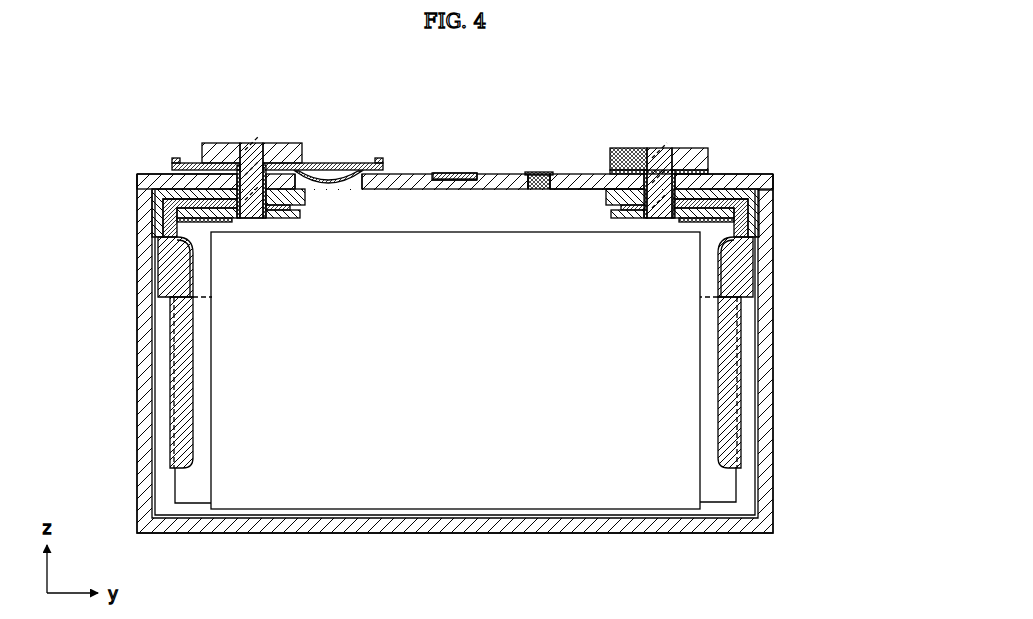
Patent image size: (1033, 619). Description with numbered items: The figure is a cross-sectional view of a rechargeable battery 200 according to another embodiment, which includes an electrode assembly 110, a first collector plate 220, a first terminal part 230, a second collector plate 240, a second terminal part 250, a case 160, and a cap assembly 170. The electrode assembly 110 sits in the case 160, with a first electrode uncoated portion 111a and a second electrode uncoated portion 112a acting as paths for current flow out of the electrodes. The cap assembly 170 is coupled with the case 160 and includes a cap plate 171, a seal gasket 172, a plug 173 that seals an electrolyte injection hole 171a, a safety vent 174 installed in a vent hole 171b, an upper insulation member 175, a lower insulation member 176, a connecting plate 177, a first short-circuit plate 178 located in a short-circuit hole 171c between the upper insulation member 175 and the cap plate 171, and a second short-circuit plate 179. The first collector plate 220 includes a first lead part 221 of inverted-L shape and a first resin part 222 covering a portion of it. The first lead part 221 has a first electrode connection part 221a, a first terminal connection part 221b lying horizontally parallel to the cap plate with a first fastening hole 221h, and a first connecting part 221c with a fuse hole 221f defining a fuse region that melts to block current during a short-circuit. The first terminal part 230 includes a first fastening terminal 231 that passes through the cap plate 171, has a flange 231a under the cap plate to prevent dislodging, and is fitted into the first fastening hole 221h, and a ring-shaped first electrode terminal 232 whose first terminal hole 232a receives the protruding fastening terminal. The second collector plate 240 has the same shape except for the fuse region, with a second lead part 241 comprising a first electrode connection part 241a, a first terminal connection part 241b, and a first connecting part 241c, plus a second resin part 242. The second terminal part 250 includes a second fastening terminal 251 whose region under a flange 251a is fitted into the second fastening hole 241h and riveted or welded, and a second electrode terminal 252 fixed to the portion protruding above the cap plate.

The rechargeable battery 200 is at (828, 101).
The electrode assembly 110 is at (440, 480).
The first electrode uncoated portion 111a is at (190, 503).
The second electrode uncoated portion 112a is at (723, 502).
The case 160 is at (547, 535).
The cap assembly 170 is at (424, 160).
The cap plate 171 is at (584, 181).
The electrolyte injection hole 171a is at (540, 190).
The vent hole 171b is at (455, 190).
The short-circuit hole 171c is at (345, 190).
The seal gasket 172 is at (233, 193).
The plug 173 is at (540, 172).
The safety vent 174 is at (472, 173).
The upper insulation member 175 is at (379, 158).
The lower insulation member 176 is at (150, 179).
The connecting plate 177 is at (705, 170).
The first short-circuit plate 178 is at (325, 178).
The second short-circuit plate 179 is at (337, 163).
The first collector plate 220 is at (742, 384).
The first lead part 221 is at (837, 232).
The first electrode connection part 221a is at (740, 317).
The first terminal connection part 221b is at (745, 215).
The first connecting part 221c is at (743, 250).
The fuse hole 221f is at (760, 191).
The first fastening hole 221h is at (655, 222).
The first resin part 222 is at (757, 205).
The first terminal part 230 is at (683, 140).
The first fastening terminal 231 is at (660, 148).
The flange 231a is at (693, 188).
The first electrode terminal 232 is at (624, 148).
The first terminal hole 232a is at (632, 148).
The second collector plate 240 is at (168, 385).
The second lead part 241 is at (76, 232).
The first electrode connection part 241a is at (173, 317).
The first terminal connection part 241b is at (177, 252).
The first connecting part 241c is at (170, 248).
The second fastening hole 241h is at (258, 222).
The second resin part 242 is at (166, 217).
The second terminal part 250 is at (232, 140).
The second fastening terminal 251 is at (252, 143).
The flange 251a is at (190, 195).
The second electrode terminal 252 is at (283, 143).